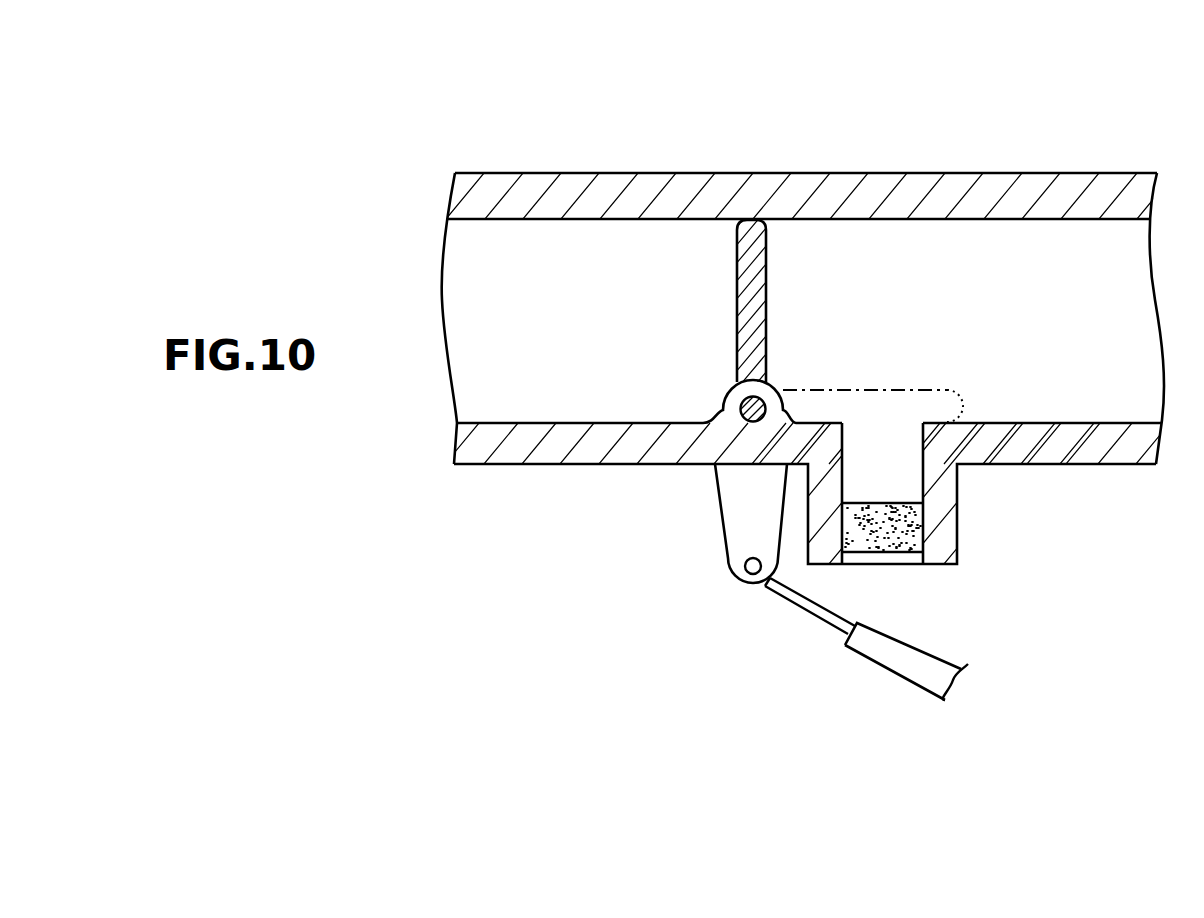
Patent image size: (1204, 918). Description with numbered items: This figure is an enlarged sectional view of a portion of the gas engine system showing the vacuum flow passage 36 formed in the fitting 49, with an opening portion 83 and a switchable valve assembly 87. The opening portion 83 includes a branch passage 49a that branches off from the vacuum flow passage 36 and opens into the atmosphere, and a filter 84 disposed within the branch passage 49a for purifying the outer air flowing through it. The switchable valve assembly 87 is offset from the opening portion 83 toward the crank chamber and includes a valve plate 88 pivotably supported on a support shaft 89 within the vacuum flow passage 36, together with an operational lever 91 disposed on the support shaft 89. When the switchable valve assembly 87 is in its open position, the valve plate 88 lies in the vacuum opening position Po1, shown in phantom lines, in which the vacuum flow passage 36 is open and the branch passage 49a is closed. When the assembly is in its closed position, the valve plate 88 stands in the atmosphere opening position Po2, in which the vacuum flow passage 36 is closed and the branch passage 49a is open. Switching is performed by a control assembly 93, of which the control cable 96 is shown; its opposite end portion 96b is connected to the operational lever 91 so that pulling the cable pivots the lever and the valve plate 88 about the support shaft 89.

The vacuum flow passage 36 is at (1025, 173).
The fitting 49 is at (918, 173).
The branch passage 49a is at (945, 508).
The opening portion 83 is at (1062, 497).
The filter 84 is at (895, 538).
The switchable valve assembly 87 is at (558, 614).
The valve plate 88 is at (748, 305).
The support shaft 89 is at (740, 404).
The operational lever 91 is at (745, 528).
The control assembly 93 is at (888, 673).
The control cable 96 is at (827, 618).
The opposite end portion 96b is at (772, 592).
The vacuum opening position Po1 is at (950, 390).
The atmosphere opening position Po2 is at (737, 220).